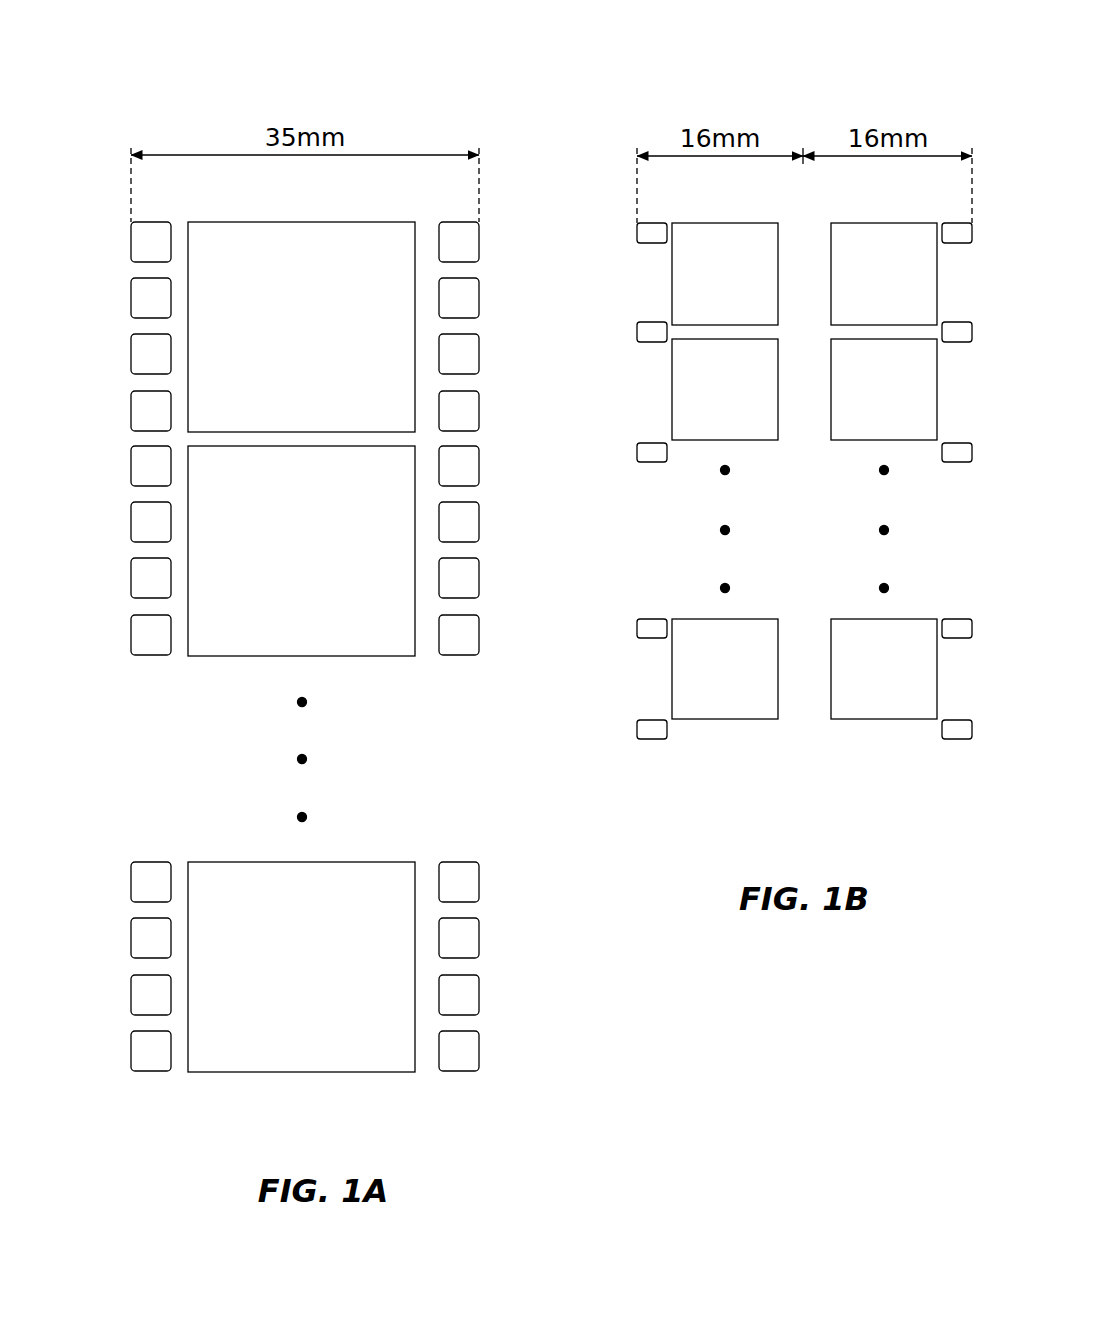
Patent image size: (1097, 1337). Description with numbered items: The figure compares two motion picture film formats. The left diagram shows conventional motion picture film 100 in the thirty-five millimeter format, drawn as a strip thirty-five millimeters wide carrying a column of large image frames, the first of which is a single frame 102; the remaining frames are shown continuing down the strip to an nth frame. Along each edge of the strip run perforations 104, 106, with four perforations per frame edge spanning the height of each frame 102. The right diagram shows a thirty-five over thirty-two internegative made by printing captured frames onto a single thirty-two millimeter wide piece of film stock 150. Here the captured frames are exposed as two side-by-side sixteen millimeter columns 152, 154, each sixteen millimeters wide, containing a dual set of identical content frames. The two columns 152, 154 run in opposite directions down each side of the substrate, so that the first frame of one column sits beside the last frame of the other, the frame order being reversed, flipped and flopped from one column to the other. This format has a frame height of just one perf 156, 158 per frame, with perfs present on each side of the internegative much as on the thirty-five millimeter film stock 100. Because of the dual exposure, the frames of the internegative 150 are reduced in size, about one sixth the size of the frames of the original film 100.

In FIG. 1A, the motion picture film 100 is at (168, 76).
In FIG. 1A, the frame 102 is at (364, 213).
In FIG. 1A, the perforations 104 is at (151, 1078).
In FIG. 1A, the perforations 106 is at (460, 1078).
In FIG. 1B, the film stock 150 is at (809, 110).
In FIG. 1B, the 16 mm column 152 is at (736, 729).
In FIG. 1B, the 16 mm column 154 is at (886, 729).
In FIG. 1B, the perf 156 is at (652, 747).
In FIG. 1B, the perf 158 is at (957, 747).